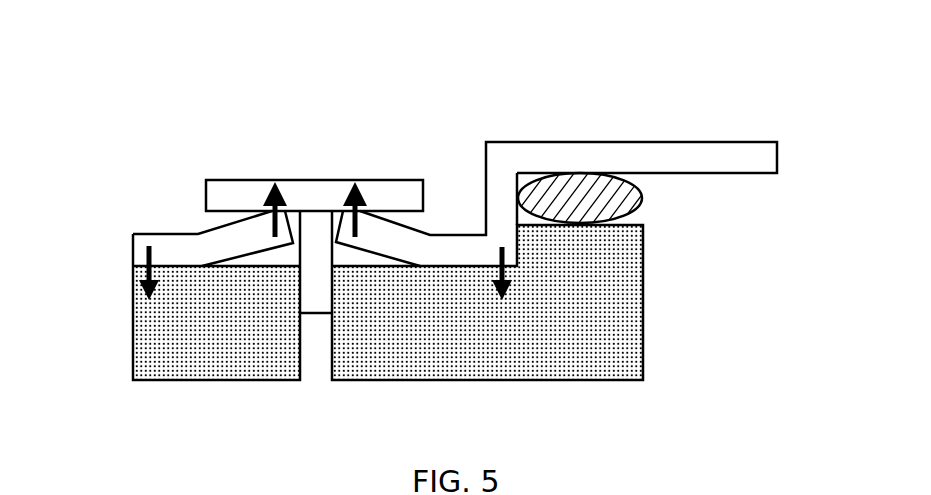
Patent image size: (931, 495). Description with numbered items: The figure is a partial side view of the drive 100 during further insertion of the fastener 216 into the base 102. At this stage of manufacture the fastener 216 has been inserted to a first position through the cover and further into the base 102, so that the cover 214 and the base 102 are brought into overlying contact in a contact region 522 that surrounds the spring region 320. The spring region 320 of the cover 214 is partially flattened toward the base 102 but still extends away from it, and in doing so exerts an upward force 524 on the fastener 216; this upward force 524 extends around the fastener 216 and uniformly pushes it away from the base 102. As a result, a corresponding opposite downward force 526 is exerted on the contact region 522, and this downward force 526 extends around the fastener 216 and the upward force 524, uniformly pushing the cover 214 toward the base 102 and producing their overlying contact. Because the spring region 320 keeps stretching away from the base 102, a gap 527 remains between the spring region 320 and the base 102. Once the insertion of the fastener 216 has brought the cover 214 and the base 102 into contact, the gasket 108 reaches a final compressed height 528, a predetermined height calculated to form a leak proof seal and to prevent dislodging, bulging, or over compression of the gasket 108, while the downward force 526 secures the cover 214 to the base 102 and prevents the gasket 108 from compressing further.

The drive 100 is at (108, 137).
The base 102 is at (133, 324).
The gasket 108 is at (575, 200).
The cover 214 is at (715, 160).
The fastener 216 is at (315, 190).
The spring region 320 is at (295, 148).
The contact region 522 is at (198, 197).
The upward force 524 is at (283, 255).
The downward force 526 is at (133, 250).
The gap 527 is at (355, 245).
The final compressed height 528 is at (797, 173).